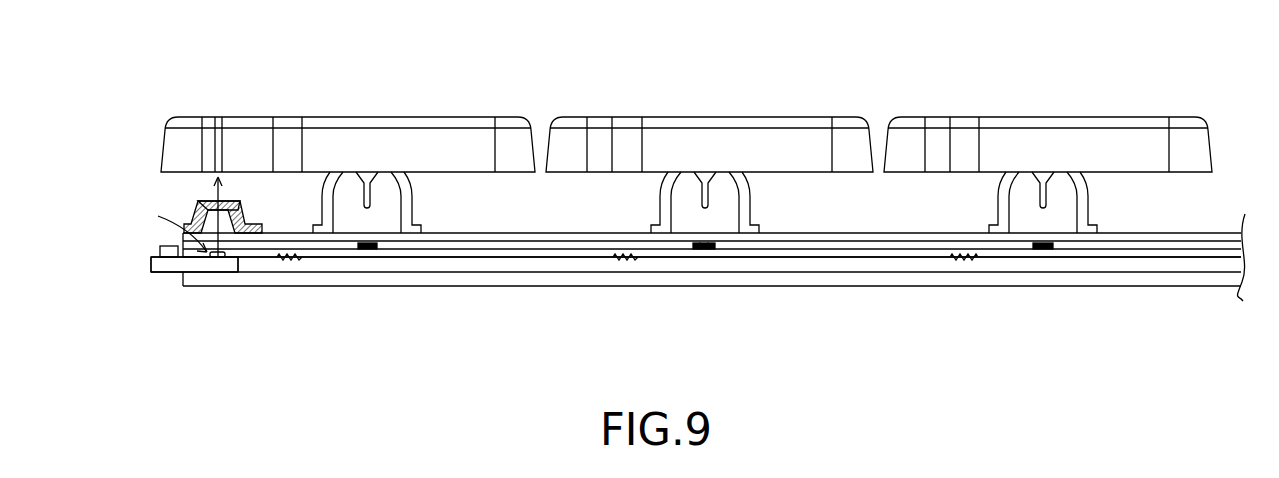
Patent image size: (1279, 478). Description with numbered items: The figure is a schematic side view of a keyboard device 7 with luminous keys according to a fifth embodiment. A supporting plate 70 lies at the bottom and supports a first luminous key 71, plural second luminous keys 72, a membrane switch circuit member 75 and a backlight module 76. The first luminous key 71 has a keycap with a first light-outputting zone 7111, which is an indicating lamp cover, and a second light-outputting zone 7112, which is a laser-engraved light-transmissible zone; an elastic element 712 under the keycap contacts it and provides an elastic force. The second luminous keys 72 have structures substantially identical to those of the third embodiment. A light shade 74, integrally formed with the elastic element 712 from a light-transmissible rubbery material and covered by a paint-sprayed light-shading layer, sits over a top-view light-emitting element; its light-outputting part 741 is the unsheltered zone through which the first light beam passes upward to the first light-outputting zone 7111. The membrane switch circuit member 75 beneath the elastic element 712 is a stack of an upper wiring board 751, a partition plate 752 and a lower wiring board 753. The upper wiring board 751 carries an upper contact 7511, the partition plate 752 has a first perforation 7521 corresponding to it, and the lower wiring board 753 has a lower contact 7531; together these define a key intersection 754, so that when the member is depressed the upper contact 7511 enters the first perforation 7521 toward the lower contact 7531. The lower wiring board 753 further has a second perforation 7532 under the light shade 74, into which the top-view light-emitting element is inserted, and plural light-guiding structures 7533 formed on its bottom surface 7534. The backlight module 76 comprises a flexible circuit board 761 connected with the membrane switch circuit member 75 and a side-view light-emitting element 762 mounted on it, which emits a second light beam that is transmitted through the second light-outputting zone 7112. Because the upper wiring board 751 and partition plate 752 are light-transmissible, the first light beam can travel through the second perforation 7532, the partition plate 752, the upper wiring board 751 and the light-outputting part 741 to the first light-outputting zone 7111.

The keyboard device 7 is at (1073, 35).
The supporting plate 70 is at (696, 294).
The first luminous key 71 is at (331, 120).
The first light-outputting zone 7111 is at (217, 122).
The second light-outputting zone 7112 is at (291, 124).
The elastic element 712 is at (407, 221).
The second luminous key 72 is at (786, 118).
The light shade 74 is at (217, 183).
The light-outputting part 741 is at (213, 203).
The membrane switch circuit member 75 is at (657, 283).
The upper wiring board 751 is at (856, 234).
The partition plate 752 is at (892, 245).
The lower wiring board 753 is at (1087, 253).
The key intersection 754 is at (701, 309).
The upper contact 7511 is at (751, 289).
The first perforation 7521 is at (693, 246).
The lower contact 7531 is at (701, 251).
The second perforation 7532 is at (240, 259).
The light-guiding structures 7533 is at (290, 259).
The bottom surface 7534 is at (827, 258).
The backlight module 76 is at (155, 286).
The flexible circuit board 761 is at (166, 262).
The side-view light-emitting element 762 is at (166, 245).